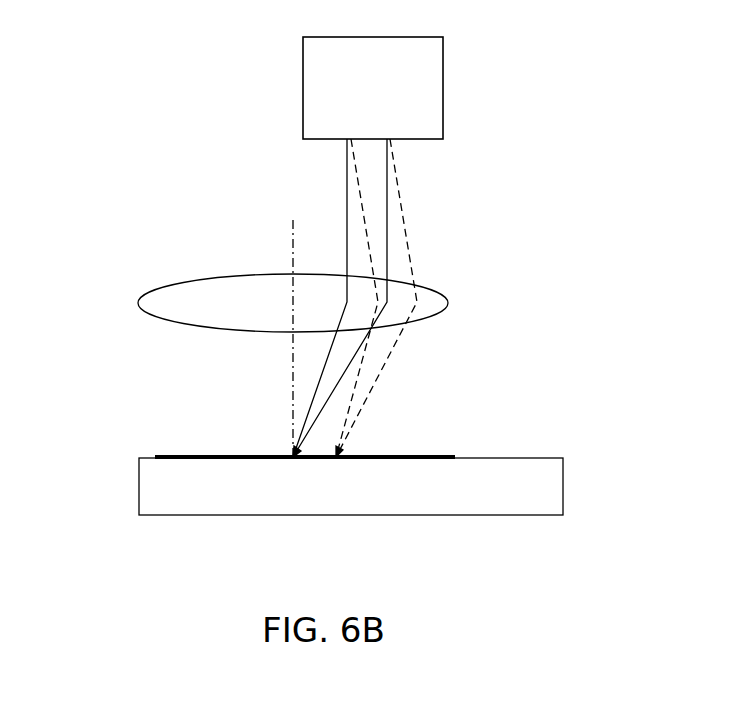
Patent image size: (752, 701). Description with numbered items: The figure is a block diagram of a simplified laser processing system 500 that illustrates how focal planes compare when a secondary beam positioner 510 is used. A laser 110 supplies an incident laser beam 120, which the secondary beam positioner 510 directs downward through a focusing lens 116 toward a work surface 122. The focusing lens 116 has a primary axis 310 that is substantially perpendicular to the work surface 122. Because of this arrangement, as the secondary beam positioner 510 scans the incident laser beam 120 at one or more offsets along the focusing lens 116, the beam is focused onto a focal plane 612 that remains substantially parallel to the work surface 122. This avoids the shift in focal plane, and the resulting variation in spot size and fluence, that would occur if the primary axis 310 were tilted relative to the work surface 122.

The system 500 is at (218, 93).
The laser 110 is at (10, 109).
The secondary beam positioner 510 is at (443, 72).
The incident laser beam 120 is at (347, 183).
The focusing lens 116 is at (212, 277).
The primary axis 310 is at (292, 352).
The focal plane 612 is at (447, 456).
The work surface 122 is at (513, 458).